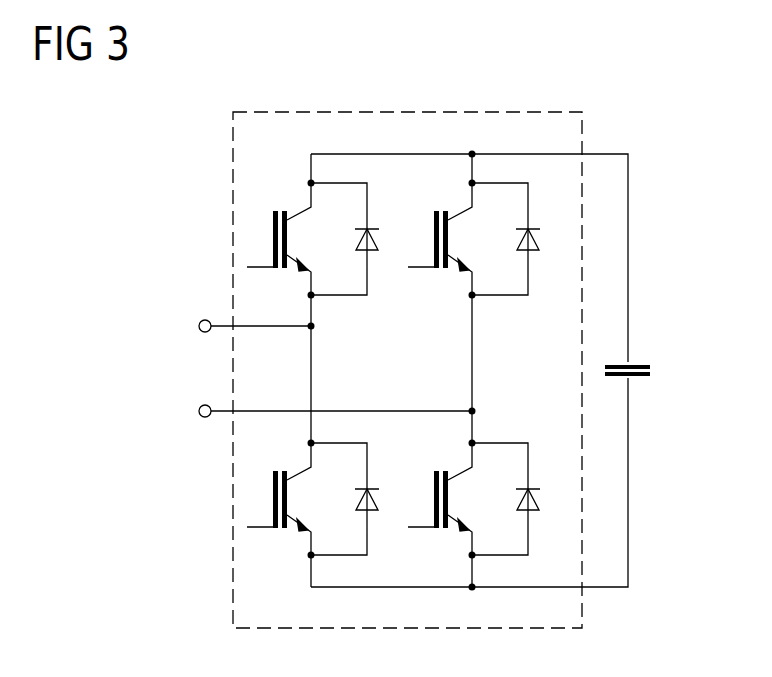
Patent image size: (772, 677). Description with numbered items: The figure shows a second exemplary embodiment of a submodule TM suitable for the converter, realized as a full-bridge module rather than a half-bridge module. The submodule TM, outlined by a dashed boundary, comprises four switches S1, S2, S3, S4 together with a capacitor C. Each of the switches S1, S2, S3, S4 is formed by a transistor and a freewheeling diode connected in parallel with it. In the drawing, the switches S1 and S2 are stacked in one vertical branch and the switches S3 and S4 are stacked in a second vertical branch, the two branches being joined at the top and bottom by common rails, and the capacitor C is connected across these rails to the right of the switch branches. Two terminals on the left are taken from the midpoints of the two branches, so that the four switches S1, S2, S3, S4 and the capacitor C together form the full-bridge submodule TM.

The switch S1 is at (273, 232).
The switch S2 is at (273, 492).
The switch S3 is at (434, 241).
The switch S4 is at (434, 505).
The submodule TM is at (482, 112).
The capacitor C is at (642, 364).